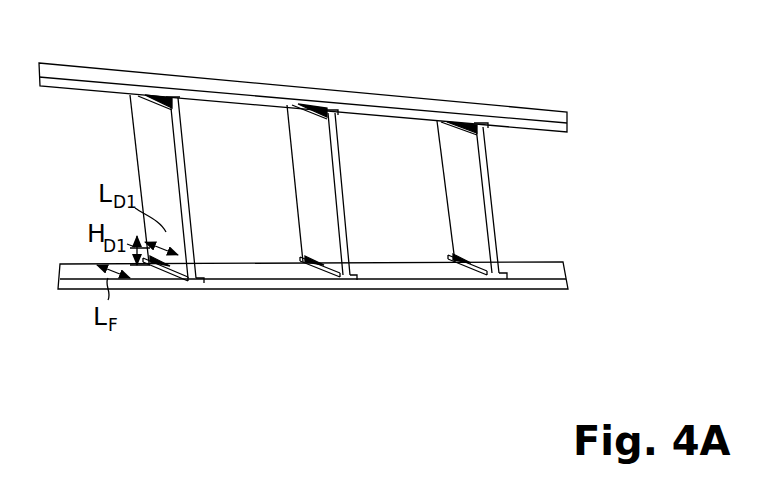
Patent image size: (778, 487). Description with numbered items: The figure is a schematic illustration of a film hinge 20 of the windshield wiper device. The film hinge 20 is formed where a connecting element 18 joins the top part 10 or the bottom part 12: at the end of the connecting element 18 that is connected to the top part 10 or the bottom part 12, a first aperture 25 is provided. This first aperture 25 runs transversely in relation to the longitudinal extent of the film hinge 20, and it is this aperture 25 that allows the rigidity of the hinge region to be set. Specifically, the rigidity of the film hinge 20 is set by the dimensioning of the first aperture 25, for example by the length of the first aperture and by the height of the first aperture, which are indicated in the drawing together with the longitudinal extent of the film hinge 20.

The top part 10 is at (298, 94).
The bottom part 12 is at (298, 280).
The connecting element 18 is at (310, 170).
The film hinge 20 is at (200, 97).
The first aperture 25 is at (322, 103).